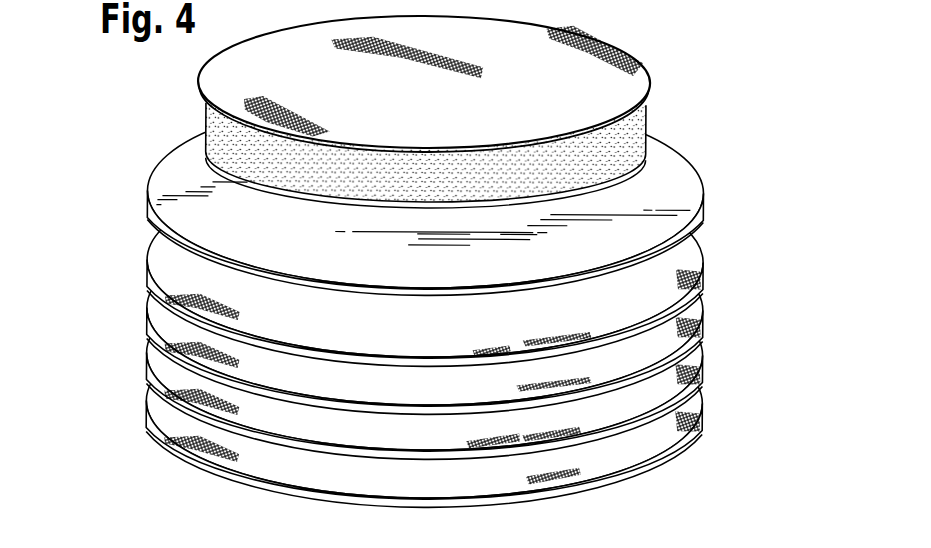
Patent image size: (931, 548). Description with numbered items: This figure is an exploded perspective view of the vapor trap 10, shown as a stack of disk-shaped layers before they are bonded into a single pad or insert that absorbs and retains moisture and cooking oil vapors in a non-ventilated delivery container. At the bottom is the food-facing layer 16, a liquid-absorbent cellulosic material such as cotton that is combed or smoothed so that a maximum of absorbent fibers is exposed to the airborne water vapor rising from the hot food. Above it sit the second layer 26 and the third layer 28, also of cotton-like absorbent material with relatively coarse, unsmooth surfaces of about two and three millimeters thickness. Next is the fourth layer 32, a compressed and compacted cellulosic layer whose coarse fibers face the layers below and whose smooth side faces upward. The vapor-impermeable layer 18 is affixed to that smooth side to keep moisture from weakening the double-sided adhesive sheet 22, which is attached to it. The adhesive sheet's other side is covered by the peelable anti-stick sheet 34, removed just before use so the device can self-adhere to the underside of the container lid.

The vapor trap 10 is at (104, 237).
The peelable anti-stick sheet 34 is at (210, 75).
The double-sided adhesive sheet 22 is at (646, 125).
The vapor-impermeable layer 18 is at (688, 176).
The fourth layer 32 is at (691, 250).
The third layer 28 is at (693, 307).
The second layer 26 is at (693, 354).
The food-facing layer 16 is at (693, 402).